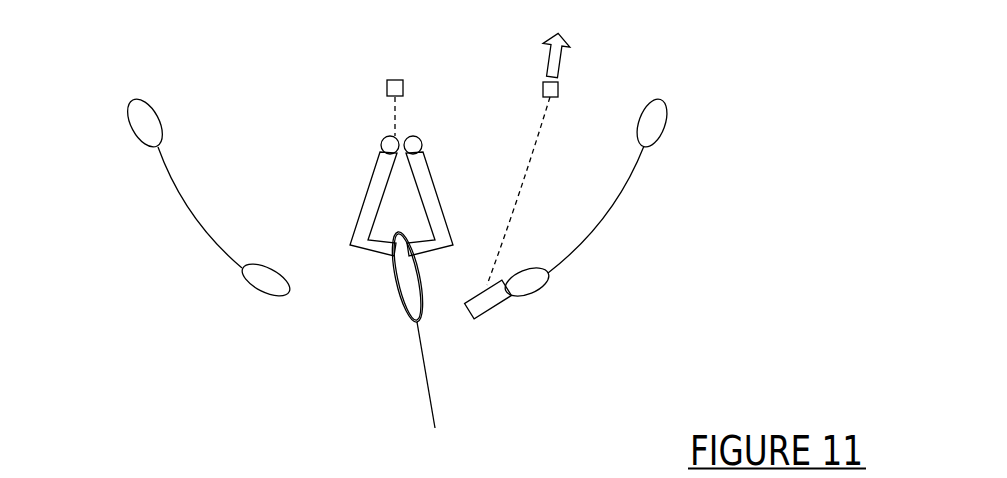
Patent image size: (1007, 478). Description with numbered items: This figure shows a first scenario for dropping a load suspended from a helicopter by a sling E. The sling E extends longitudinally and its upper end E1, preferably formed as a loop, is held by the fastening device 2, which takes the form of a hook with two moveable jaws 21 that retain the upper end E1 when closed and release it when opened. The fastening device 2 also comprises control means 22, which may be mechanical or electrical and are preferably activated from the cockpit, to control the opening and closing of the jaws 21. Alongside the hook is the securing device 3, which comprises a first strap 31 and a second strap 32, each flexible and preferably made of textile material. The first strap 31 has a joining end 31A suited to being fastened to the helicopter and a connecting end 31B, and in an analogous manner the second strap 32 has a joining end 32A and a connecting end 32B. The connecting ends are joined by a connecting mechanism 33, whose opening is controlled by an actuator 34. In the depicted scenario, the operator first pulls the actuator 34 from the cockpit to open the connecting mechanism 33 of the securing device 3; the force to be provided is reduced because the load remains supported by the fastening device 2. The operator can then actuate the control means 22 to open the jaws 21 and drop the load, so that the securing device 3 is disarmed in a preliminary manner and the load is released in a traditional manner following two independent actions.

The fastening device 2 is at (395, 147).
The jaws 21 is at (432, 180).
The control means 22 is at (403, 86).
The securing device 3 is at (608, 185).
The first strap 31 is at (192, 213).
The joining end 31A is at (130, 127).
The connecting end 31B is at (257, 288).
The second strap 32 is at (605, 212).
The joining end 32A is at (665, 130).
The connecting end 32B is at (538, 292).
The connecting mechanism 33 is at (493, 310).
The actuator 34 is at (558, 89).
The sling E is at (428, 393).
The upper end E1 is at (395, 278).